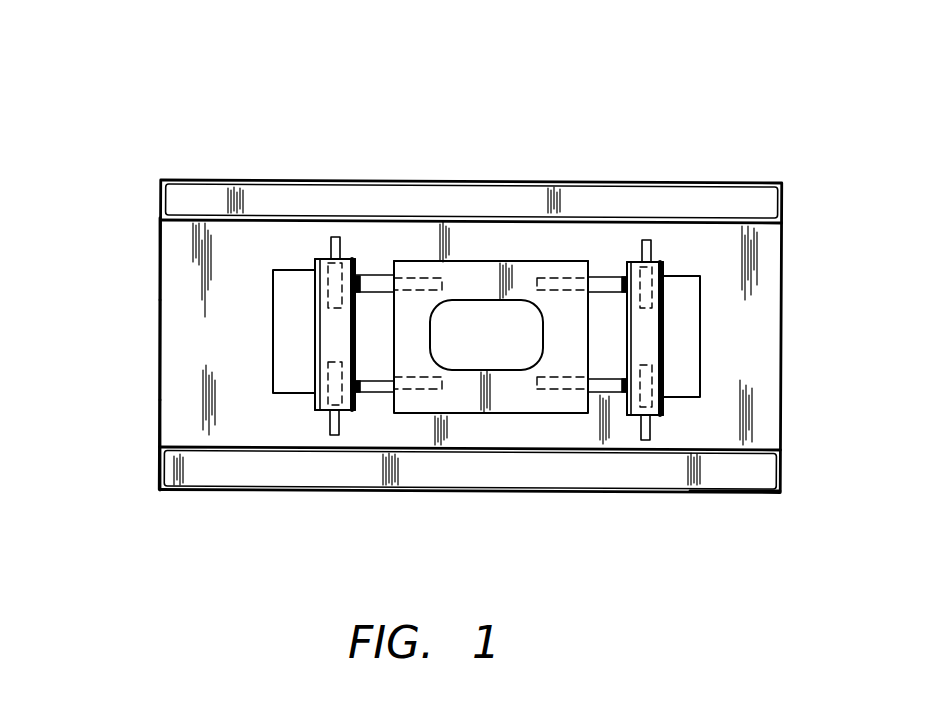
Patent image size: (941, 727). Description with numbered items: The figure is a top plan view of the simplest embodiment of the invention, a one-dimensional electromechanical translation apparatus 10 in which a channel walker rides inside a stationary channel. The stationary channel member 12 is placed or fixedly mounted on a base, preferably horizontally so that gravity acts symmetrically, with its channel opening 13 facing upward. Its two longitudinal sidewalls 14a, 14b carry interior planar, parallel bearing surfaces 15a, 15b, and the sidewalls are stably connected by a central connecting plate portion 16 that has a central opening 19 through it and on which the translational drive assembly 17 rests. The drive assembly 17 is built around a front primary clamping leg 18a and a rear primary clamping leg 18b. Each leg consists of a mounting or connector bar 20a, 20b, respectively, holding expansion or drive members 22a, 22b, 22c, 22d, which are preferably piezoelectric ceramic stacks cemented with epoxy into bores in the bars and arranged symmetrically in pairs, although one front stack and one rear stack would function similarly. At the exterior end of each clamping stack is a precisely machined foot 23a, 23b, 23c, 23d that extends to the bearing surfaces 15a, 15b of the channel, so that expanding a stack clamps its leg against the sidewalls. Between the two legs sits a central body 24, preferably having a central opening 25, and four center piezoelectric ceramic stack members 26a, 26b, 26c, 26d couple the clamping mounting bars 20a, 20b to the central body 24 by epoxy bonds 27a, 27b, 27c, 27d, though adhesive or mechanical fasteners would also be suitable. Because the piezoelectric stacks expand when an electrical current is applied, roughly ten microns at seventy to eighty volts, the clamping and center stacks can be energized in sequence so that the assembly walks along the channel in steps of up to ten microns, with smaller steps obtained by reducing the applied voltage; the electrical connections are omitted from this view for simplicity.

The electromechanical translation apparatus 10 is at (816, 93).
The stationary channel member 12 is at (207, 182).
The channel opening 13 is at (700, 453).
The longitudinal sidewall 14a is at (759, 206).
The longitudinal sidewall 14b is at (768, 471).
The bearing surface 15a is at (175, 221).
The bearing surface 15b is at (170, 448).
The central connecting plate portion 16 is at (158, 378).
The translational drive assembly 17 is at (489, 261).
The front primary clamping leg 18a is at (312, 338).
The rear primary clamping leg 18b is at (668, 303).
The central opening 19 is at (698, 327).
The mounting bar 20a is at (318, 310).
The mounting bar 20b is at (666, 376).
The expansion drive member 22a is at (327, 257).
The expansion drive member 22b is at (328, 420).
The expansion drive member 22c is at (653, 252).
The expansion drive member 22d is at (650, 430).
The foot 23a is at (336, 237).
The foot 23b is at (332, 436).
The foot 23c is at (646, 240).
The foot 23d is at (645, 440).
The central body 24 is at (465, 261).
The central opening 25 is at (522, 305).
The center piezoelectric ceramic stack member 26a is at (386, 275).
The center piezoelectric ceramic stack member 26b is at (380, 393).
The center piezoelectric ceramic stack member 26c is at (606, 277).
The center piezoelectric ceramic stack member 26d is at (600, 393).
The epoxy bond 27a is at (364, 275).
The epoxy bond 27b is at (357, 393).
The epoxy bond 27c is at (624, 277).
The epoxy bond 27d is at (623, 394).